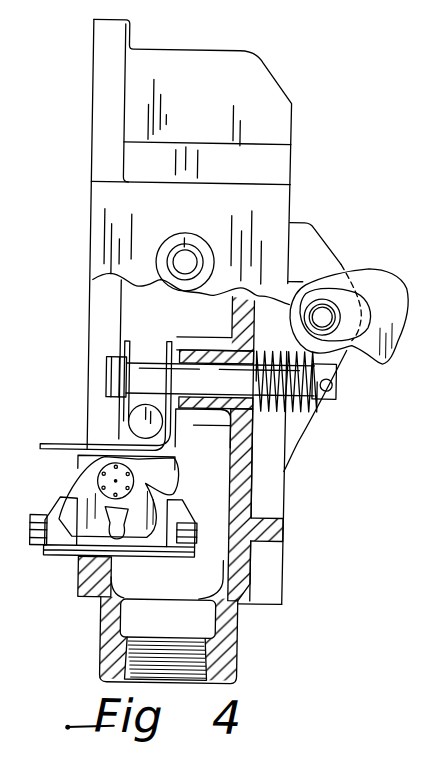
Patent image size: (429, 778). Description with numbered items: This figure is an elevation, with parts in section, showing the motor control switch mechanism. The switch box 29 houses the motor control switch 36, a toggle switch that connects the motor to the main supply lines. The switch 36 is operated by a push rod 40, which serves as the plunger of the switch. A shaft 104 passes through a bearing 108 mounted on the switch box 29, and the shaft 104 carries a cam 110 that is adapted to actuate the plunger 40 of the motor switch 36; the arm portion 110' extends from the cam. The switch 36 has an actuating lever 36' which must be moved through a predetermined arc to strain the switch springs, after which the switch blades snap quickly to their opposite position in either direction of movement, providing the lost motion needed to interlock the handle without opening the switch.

The switch box 29 is at (183, 351).
The bearing 108 is at (335, 255).
The shaft 104 is at (345, 307).
The cam 110 is at (358, 316).
The lever arm 110' is at (321, 411).
The push rod 40 is at (337, 393).
The actuating lever 36' is at (106, 395).
The motor control switch 36 is at (122, 507).